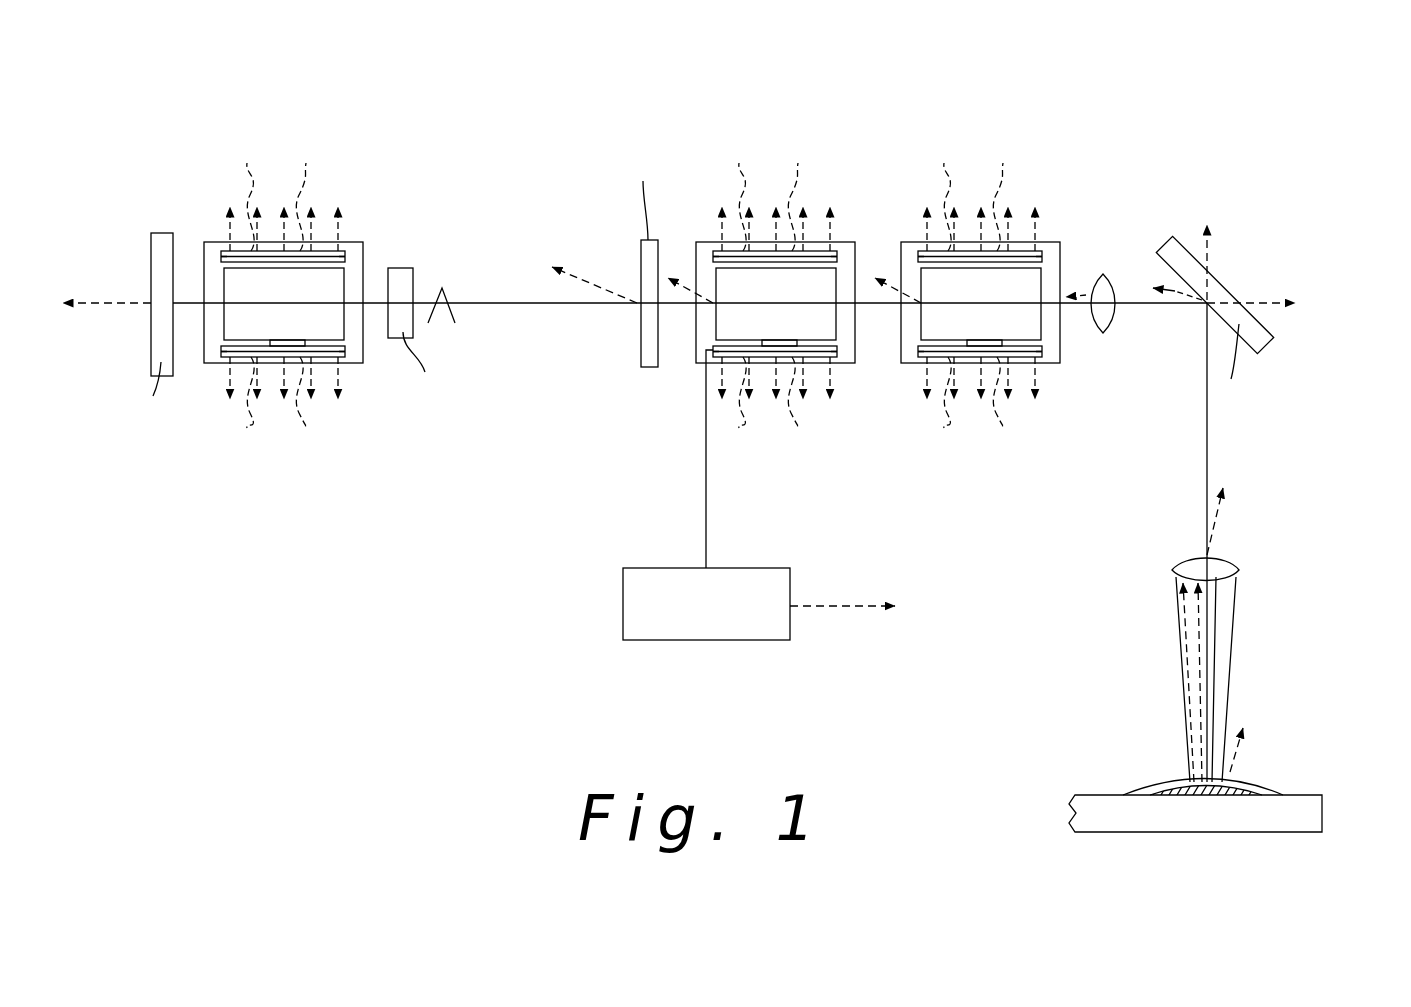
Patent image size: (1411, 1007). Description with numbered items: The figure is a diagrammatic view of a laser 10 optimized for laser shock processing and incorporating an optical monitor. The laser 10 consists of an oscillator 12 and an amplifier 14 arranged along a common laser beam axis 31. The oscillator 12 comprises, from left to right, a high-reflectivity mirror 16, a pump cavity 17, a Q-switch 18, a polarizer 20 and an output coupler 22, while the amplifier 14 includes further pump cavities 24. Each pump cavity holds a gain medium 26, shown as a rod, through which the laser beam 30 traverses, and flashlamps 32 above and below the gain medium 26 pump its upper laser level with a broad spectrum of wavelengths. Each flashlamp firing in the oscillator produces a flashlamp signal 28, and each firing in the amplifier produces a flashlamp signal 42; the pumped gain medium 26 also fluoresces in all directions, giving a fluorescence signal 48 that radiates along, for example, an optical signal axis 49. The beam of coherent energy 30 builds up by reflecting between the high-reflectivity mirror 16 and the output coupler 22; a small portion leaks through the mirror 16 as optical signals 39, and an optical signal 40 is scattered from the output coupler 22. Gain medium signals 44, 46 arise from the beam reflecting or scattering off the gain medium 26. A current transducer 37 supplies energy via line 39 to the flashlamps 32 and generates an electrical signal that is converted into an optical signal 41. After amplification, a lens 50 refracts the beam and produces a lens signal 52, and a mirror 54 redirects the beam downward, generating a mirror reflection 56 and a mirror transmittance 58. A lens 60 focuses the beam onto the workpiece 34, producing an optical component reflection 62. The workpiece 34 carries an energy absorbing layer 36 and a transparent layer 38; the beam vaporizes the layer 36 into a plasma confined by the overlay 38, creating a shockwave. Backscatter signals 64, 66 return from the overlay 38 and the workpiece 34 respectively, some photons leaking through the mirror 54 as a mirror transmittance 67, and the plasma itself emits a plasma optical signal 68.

The laser 10 is at (153, 168).
The oscillator 12 is at (445, 437).
The amplifier 14 is at (1043, 461).
The high-reflectivity mirror 16 is at (156, 233).
The pump cavity 17 is at (364, 262).
The Q-switch 18 is at (402, 268).
The polarizer 20 is at (445, 291).
The output coupler 22 is at (650, 367).
The pump cavity 24 is at (856, 252).
The gain medium 26 is at (342, 326).
The flashlamp signal 28 is at (300, 259).
The laser beam 30 is at (500, 317).
The laser beam axis 31 is at (584, 304).
The flashlamps 32 is at (338, 256).
The workpiece 34 is at (1313, 805).
The energy absorbing layer 36 is at (1173, 785).
The current transducer 37 is at (687, 640).
The transparent layer 38 is at (1172, 780).
The optical signals 39 is at (88, 307).
The optical signal 40 is at (558, 269).
The optical signal 41 is at (872, 607).
The flashlamp signal 42 is at (718, 259).
The gain medium signal 44 is at (677, 276).
The gain medium signal 46 is at (880, 274).
The fluorescence signal 48 is at (252, 160).
The optical signal axis 49 is at (790, 190).
The lens 50 is at (1107, 274).
The lens signal 52 is at (1080, 295).
The mirror 54 is at (1182, 242).
The mirror reflection 56 is at (1172, 290).
The mirror transmittance 58 is at (1273, 302).
The lens 60 is at (1237, 562).
The optical component reflection 62 is at (1225, 500).
The backscatter signal 64 is at (1200, 750).
The backscatter signal 66 is at (1187, 745).
The mirror transmittance 67 is at (1210, 245).
The plasma optical signal 68 is at (1245, 748).